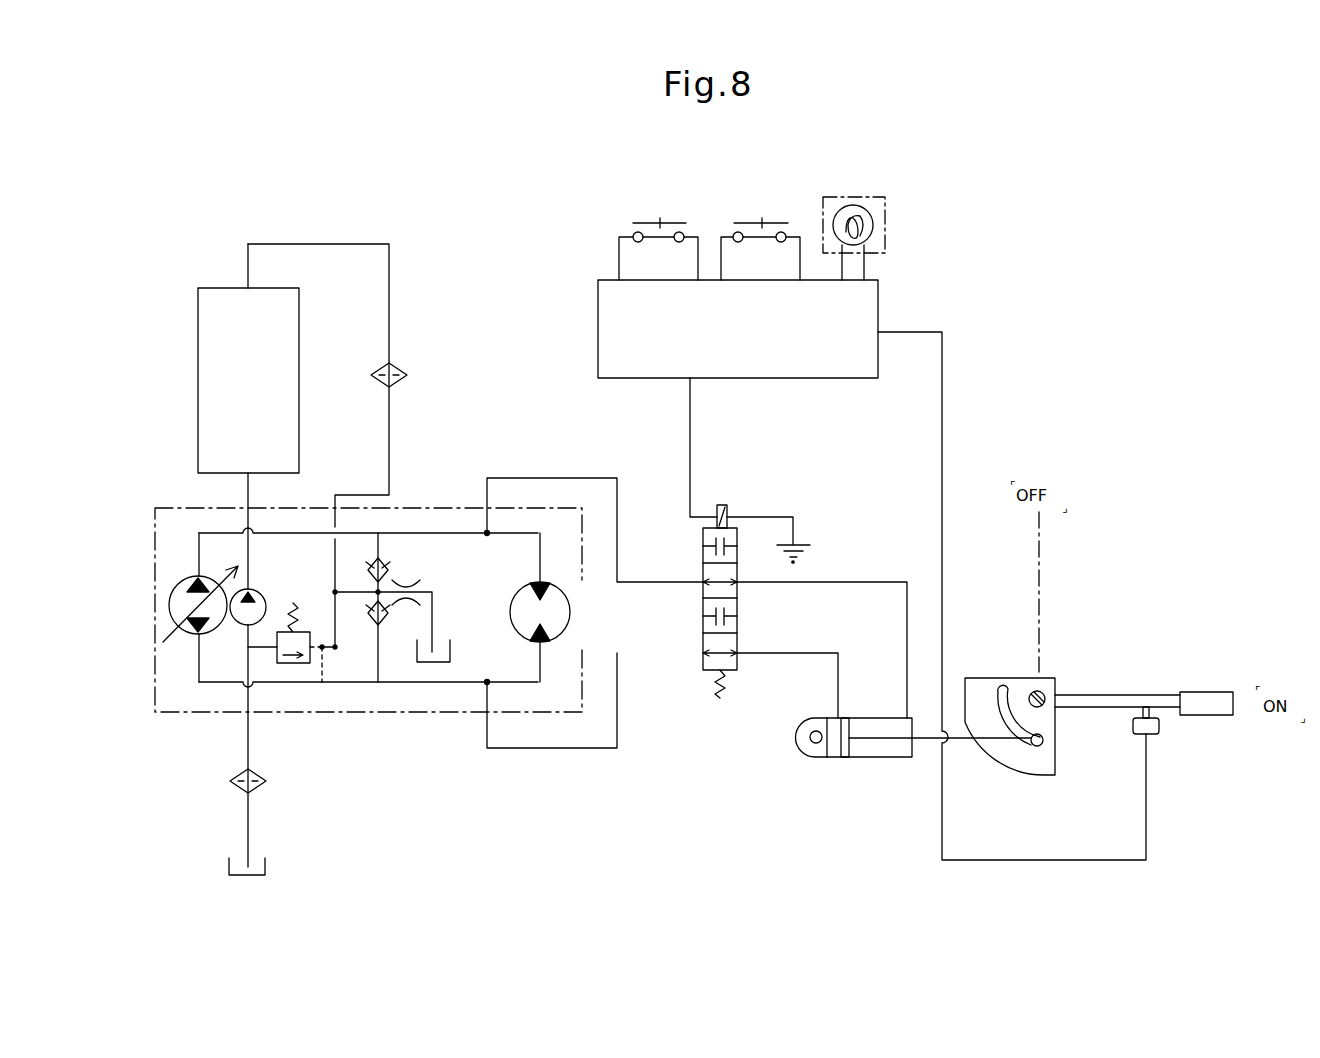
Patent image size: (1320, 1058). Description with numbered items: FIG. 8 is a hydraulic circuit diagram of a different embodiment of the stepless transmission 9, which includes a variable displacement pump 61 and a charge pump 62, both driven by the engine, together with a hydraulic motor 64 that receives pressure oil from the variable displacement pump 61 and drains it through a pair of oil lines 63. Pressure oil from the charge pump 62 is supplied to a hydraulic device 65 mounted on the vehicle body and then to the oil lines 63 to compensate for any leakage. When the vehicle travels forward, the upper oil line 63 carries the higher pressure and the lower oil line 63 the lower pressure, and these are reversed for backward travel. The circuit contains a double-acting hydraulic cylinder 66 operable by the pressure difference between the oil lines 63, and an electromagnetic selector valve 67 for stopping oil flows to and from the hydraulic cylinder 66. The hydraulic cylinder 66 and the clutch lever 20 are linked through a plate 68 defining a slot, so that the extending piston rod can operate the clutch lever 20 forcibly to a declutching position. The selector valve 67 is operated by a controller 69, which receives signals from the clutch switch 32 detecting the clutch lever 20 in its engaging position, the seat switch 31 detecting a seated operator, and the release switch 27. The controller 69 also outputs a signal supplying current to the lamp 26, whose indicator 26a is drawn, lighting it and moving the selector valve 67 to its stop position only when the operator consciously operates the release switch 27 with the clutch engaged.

The stepless transmission 9 is at (293, 713).
The clutch lever 20 is at (1137, 695).
The lamp 26 is at (896, 236).
The indicator lamp 26a is at (878, 205).
The release switch 27 is at (752, 222).
The seat switch 31 is at (648, 222).
The clutch switch 32 is at (1160, 727).
The variable displacement pump 61 is at (185, 580).
The charge pump 62 is at (265, 598).
The oil lines 63 is at (436, 532).
The hydraulic motor 64 is at (508, 612).
The hydraulic device 65 is at (299, 338).
The double-acting hydraulic cylinder 66 is at (870, 757).
The electromagnetic selector valve 67 is at (703, 662).
The plate 68 is at (975, 688).
The controller 69 is at (598, 327).